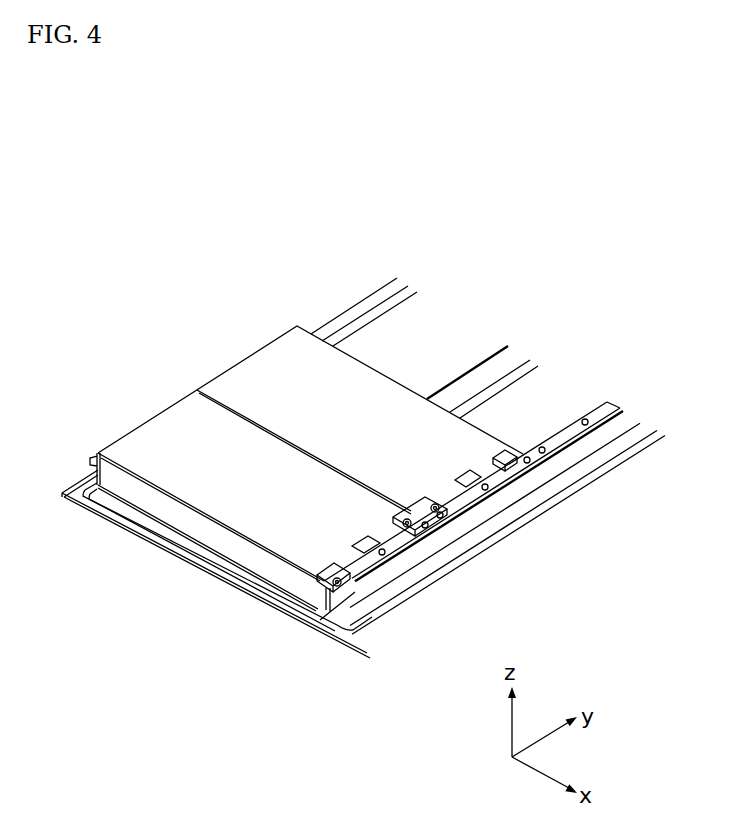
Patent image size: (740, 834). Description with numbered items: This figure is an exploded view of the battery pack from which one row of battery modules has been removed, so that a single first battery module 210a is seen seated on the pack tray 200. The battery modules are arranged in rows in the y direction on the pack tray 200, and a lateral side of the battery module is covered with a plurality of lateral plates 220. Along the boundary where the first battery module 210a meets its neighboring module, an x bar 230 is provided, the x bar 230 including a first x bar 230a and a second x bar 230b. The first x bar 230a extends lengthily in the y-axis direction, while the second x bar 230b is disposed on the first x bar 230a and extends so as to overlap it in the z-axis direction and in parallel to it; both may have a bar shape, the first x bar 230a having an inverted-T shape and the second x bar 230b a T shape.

The first battery module 210a is at (160, 404).
The pack tray 200 is at (117, 522).
The lateral plate 220 is at (192, 525).
The x bar 230 is at (369, 577).
The first x bar 230a is at (343, 593).
The second x bar 230b is at (287, 620).